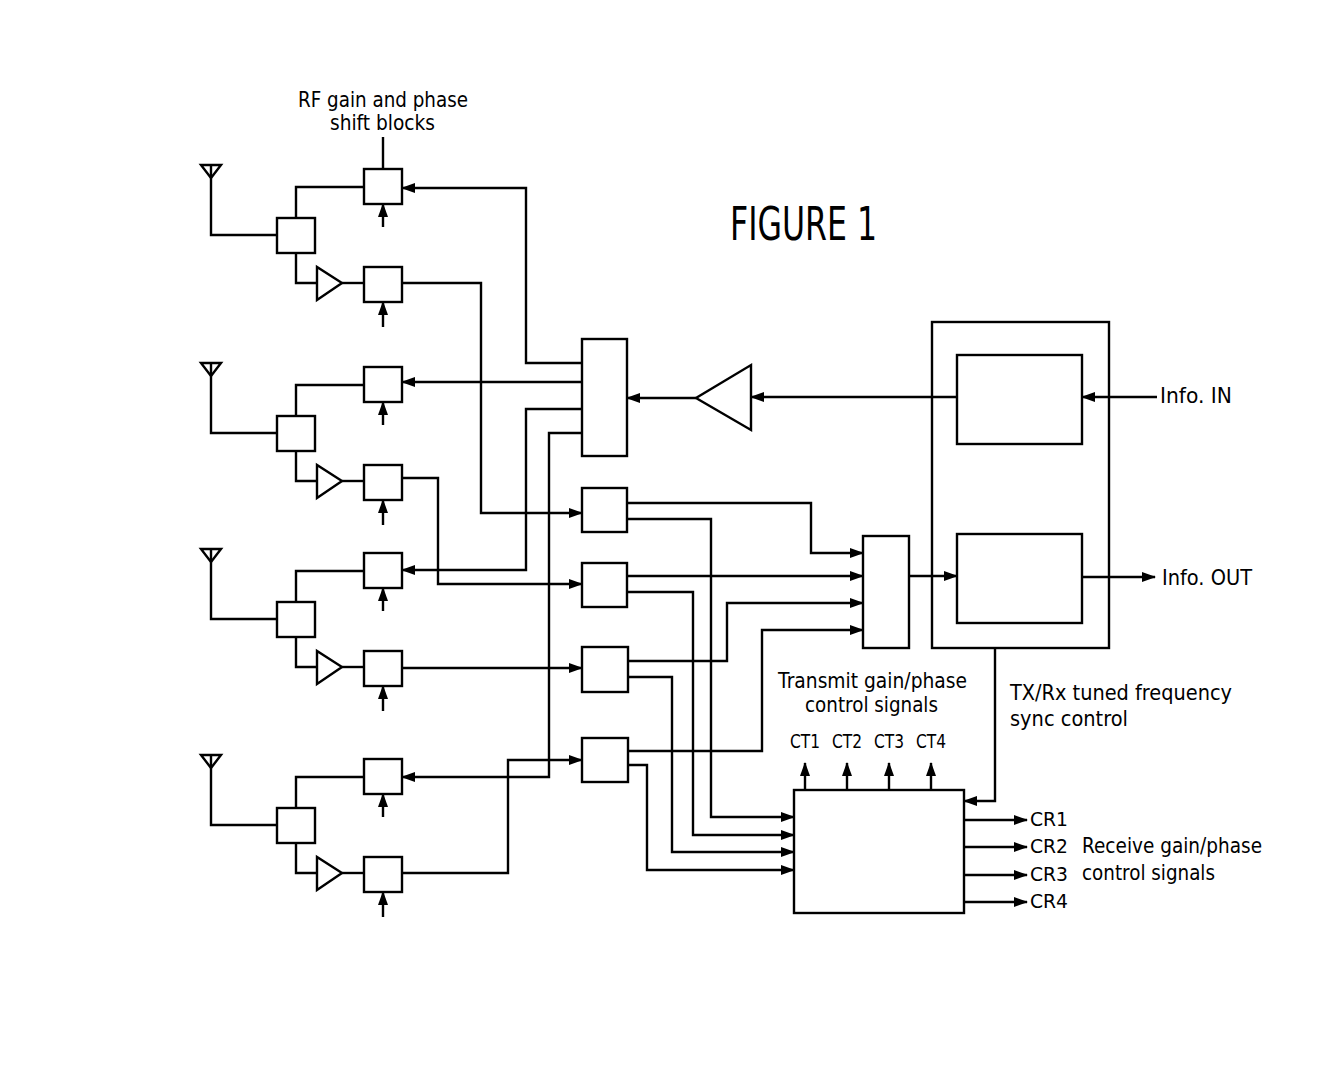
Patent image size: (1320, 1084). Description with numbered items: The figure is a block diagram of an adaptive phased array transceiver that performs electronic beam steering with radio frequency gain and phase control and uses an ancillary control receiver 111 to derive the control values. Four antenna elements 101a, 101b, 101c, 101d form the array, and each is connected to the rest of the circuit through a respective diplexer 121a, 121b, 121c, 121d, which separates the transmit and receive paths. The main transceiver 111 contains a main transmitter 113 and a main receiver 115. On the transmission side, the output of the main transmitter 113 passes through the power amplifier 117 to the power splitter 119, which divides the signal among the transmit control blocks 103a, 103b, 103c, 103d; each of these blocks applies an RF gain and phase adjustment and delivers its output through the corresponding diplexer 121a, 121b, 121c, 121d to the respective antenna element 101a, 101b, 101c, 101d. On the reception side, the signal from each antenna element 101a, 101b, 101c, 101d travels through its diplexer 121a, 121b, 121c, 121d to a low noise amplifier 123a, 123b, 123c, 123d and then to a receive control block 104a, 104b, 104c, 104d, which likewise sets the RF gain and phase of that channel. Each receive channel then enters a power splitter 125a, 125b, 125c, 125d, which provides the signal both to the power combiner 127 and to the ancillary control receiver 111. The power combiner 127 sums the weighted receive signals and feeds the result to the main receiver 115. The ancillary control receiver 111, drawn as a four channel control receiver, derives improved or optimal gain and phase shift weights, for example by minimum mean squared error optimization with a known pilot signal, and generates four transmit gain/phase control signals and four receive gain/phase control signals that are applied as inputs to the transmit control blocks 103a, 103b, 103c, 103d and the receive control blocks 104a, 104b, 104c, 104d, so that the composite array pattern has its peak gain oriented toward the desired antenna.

The antenna element 101a is at (205, 169).
The antenna element 101b is at (216, 398).
The antenna element 101c is at (216, 584).
The antenna element 101d is at (216, 790).
The diplexer 121a is at (296, 218).
The diplexer 121b is at (317, 413).
The diplexer 121c is at (307, 602).
The diplexer 121d is at (307, 808).
The low noise amplifier 123a is at (318, 293).
The low noise amplifier 123b is at (300, 488).
The low noise amplifier 123c is at (300, 674).
The low noise amplifier 123d is at (300, 879).
The transmit control block 103a is at (386, 169).
The transmit control block 103b is at (416, 396).
The transmit control block 103c is at (357, 586).
The transmit control block 103d is at (357, 791).
The receive control block 104a is at (386, 267).
The receive control block 104b is at (414, 493).
The receive control block 104c is at (414, 682).
The receive control block 104d is at (414, 885).
The power splitter 119 is at (627, 362).
The power amplifier 117 is at (753, 378).
The power splitter 125a is at (625, 489).
The power splitter 125b is at (625, 564).
The power splitter 125c is at (625, 649).
The power splitter 125d is at (606, 739).
The power combiner 127 is at (860, 540).
The main transceiver / ancillary control receiver 111 is at (930, 344).
The main transmitter 113 is at (1012, 445).
The main receiver 115 is at (1032, 534).